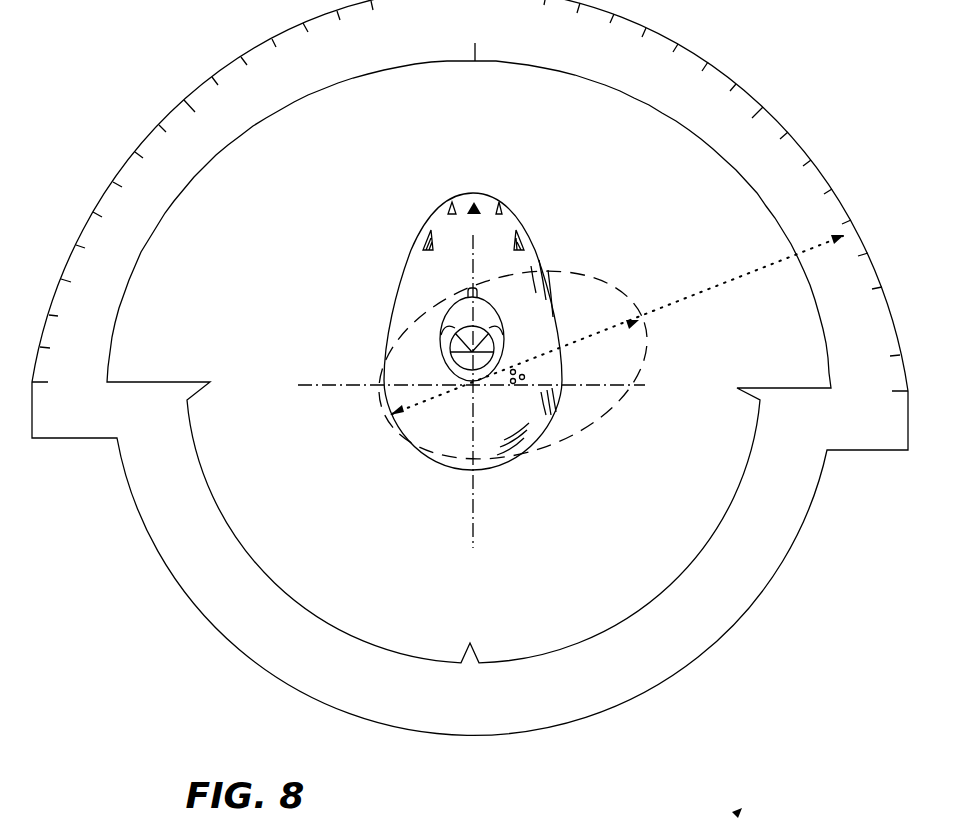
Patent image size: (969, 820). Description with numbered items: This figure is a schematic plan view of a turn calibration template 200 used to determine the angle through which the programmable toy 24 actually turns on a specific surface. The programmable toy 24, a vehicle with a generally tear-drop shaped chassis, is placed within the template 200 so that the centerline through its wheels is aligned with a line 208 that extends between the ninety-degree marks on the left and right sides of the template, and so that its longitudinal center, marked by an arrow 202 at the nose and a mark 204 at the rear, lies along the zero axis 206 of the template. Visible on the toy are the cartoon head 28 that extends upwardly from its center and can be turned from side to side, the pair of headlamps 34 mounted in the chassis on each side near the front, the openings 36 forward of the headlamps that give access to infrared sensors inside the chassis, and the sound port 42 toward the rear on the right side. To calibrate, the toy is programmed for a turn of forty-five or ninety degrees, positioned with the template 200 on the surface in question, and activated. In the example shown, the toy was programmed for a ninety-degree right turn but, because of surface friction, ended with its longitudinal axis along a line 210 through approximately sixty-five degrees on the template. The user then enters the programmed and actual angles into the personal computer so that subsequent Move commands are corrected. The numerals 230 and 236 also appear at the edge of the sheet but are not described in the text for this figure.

The template 200 is at (134, 503).
The programmable toy 24 is at (400, 298).
The head 28 is at (443, 348).
The headlamps 34 is at (425, 242).
The openings 36 is at (448, 204).
The sound port 42 is at (513, 388).
The arrow 202 is at (482, 203).
The mark 204 is at (382, 414).
The zero axis 206 is at (478, 513).
The line 208 is at (627, 390).
The line 210 is at (678, 303).
The direction arrow 230 is at (721, 789).
The direction arrow 236 is at (562, 805).